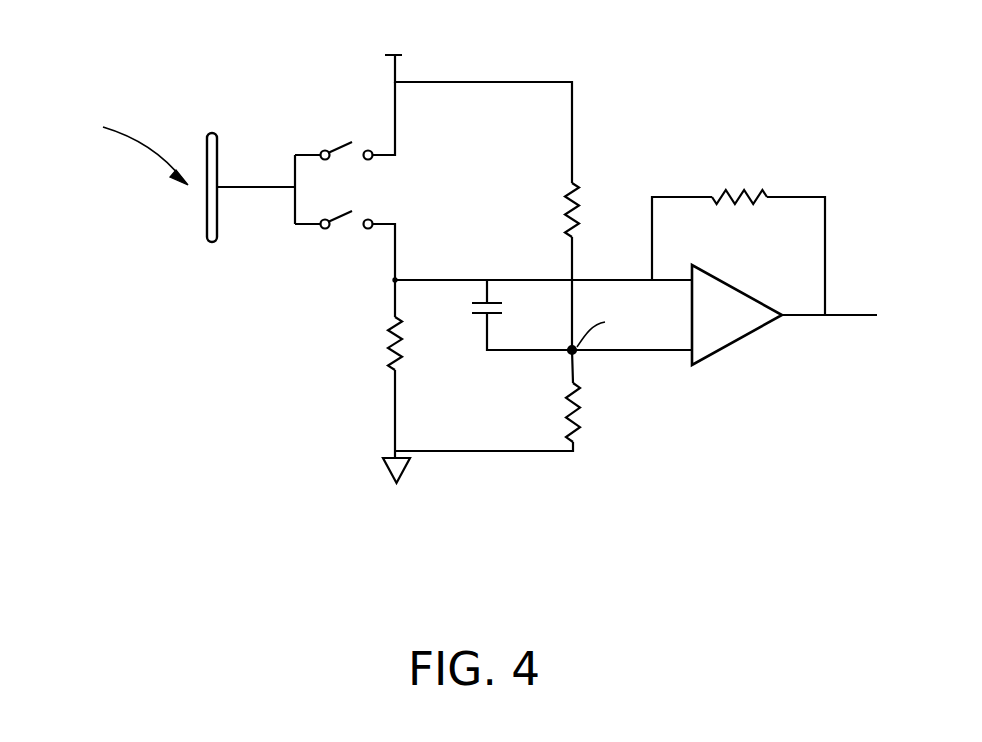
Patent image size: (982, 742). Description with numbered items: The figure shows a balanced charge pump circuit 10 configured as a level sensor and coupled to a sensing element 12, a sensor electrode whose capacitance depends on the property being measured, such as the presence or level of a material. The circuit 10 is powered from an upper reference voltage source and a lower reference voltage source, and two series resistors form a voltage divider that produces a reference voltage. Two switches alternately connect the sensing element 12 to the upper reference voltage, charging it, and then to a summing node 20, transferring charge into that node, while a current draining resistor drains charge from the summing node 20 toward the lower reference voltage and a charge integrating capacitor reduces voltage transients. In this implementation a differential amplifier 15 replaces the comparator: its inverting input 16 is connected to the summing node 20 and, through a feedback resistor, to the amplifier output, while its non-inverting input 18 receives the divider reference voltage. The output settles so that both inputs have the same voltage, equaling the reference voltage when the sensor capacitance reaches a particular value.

The charge pump circuit 10 is at (285, 380).
The sensing element 12 is at (207, 237).
The differential amplifier 15 is at (732, 307).
The inverting input 16 is at (675, 277).
The non-inverting input 18 is at (673, 352).
The summing node 20 is at (398, 280).